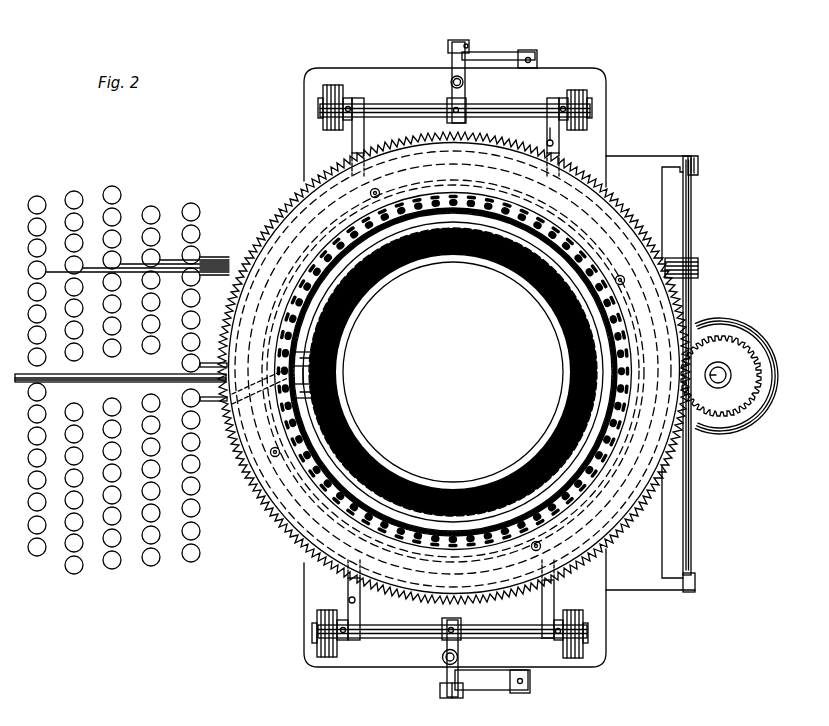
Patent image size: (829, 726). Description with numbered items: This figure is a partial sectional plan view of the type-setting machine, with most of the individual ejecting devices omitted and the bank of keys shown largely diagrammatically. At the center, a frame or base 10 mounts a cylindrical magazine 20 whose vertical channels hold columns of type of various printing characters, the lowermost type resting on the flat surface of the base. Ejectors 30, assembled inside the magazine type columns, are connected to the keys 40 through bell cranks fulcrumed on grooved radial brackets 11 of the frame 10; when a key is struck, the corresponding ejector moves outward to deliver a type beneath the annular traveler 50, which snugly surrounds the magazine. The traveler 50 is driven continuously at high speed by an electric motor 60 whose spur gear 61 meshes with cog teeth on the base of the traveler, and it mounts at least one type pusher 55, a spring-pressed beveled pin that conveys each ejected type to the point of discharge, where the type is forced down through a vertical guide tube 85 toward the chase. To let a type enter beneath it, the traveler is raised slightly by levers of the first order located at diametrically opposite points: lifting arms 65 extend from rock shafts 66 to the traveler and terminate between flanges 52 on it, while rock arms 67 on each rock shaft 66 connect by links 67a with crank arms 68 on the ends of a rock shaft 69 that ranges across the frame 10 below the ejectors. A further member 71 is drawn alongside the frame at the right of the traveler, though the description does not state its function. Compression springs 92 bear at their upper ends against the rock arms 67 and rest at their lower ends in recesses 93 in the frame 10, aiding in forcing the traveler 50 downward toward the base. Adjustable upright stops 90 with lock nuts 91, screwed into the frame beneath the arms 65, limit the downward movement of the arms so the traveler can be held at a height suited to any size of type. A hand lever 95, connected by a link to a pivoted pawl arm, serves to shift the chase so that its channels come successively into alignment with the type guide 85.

The frame 10 is at (456, 485).
The grooved radial brackets 11 is at (393, 470).
The magazine 20 is at (546, 232).
The ejectors 30 is at (318, 384).
The keys 40 is at (232, 257).
The traveler 50 is at (262, 503).
The flanges 52 is at (280, 527).
The type pusher 55 is at (378, 192).
The electric motor 60 is at (740, 334).
The spur gear 61 is at (720, 365).
The lifting arms 65 is at (352, 147).
The rock shafts 66 is at (394, 104).
The rock arms 67 is at (452, 60).
The links 67a is at (468, 42).
The crank arms 68 is at (520, 52).
The rock shaft 69 is at (530, 690).
The slide bar 71 is at (693, 214).
The vertical guide tube 85 is at (244, 396).
The upright stops 90 is at (574, 136).
The lock nuts 91 is at (547, 140).
The compression springs 92 is at (470, 660).
The recesses 93 is at (470, 653).
The hand lever 95 is at (120, 370).